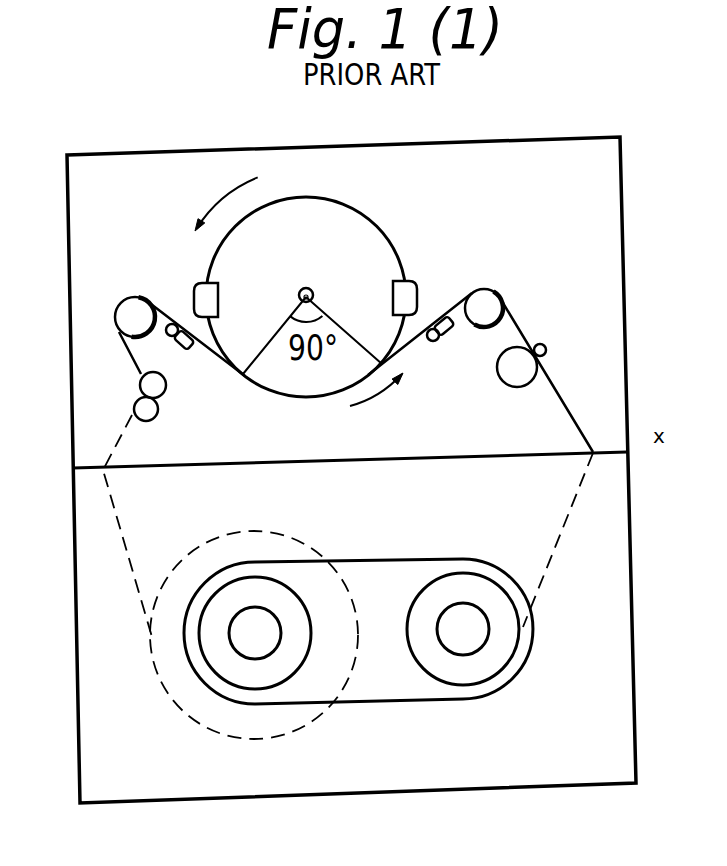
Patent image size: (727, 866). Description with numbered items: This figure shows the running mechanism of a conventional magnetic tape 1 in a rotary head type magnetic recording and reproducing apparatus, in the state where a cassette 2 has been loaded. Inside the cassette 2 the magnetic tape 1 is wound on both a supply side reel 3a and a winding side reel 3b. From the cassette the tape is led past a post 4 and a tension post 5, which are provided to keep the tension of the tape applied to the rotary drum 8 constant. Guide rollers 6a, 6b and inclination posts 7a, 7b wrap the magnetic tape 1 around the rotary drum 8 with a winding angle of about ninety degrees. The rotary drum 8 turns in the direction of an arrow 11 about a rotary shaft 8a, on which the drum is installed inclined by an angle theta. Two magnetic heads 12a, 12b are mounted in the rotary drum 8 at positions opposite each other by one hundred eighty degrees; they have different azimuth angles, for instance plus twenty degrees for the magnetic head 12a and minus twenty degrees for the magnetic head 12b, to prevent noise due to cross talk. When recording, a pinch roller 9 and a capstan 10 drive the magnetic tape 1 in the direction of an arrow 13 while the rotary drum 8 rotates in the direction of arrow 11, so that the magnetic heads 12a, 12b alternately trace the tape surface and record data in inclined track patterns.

The magnetic tape 1 is at (566, 405).
The cassette 2 is at (605, 673).
The supply side reel 3a is at (222, 652).
The winding side reel 3b is at (497, 648).
The post 4 is at (140, 411).
The tension post 5 is at (147, 383).
The guide roller 6a is at (130, 320).
The guide roller 6b is at (488, 302).
The inclination post 7a is at (172, 336).
The inclination post 7b is at (434, 341).
The rotary drum 8 is at (340, 222).
The rotary shaft 8a is at (304, 288).
The pinch roller 9 is at (512, 373).
The capstan 10 is at (546, 350).
The arrow 11 is at (235, 188).
The magnetic head 12a is at (198, 291).
The magnetic head 12b is at (413, 291).
The arrow 13 is at (377, 410).